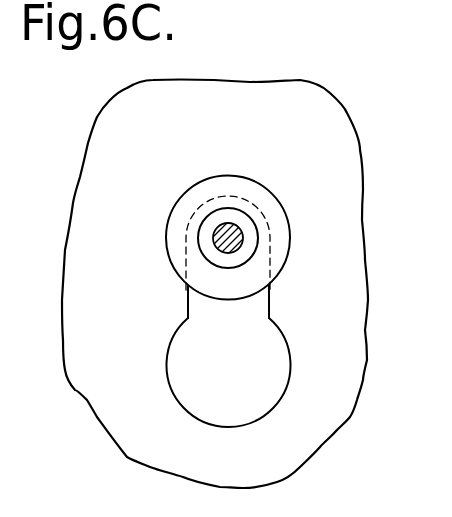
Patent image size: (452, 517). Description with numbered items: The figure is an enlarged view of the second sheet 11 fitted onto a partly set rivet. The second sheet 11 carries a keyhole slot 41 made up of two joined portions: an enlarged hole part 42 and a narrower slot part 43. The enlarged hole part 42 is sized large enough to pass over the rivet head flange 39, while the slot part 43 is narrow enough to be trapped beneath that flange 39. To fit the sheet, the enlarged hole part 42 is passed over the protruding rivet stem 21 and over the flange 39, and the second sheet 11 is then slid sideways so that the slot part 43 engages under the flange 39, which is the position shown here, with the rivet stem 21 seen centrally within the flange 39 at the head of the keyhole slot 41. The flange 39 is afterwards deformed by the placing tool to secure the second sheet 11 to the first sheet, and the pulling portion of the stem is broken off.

The second sheet 11 is at (317, 105).
The rivet stem 21 is at (240, 230).
The flange 39 is at (285, 228).
The slot part 43 is at (256, 302).
The keyhole slot 41 is at (270, 319).
The enlarged hole part 42 is at (252, 380).